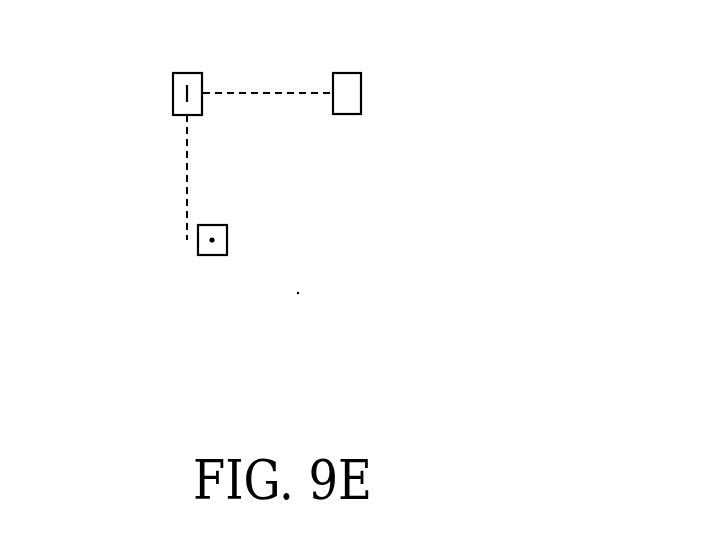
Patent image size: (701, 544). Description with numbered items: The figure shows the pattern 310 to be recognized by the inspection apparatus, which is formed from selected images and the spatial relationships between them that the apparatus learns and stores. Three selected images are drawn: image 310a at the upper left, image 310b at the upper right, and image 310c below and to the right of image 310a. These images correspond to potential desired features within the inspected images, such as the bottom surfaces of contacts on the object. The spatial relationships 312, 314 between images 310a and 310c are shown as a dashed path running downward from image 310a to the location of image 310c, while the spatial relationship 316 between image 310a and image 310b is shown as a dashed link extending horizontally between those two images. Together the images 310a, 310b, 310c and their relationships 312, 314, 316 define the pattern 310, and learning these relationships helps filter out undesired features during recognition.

The pattern 310 is at (357, 197).
The image 310a is at (188, 73).
The image 310b is at (350, 72).
The image 310c is at (218, 225).
The spatial relationship 312 is at (187, 190).
The spatial relationship 314 is at (188, 240).
The spatial relationship 316 is at (258, 93).